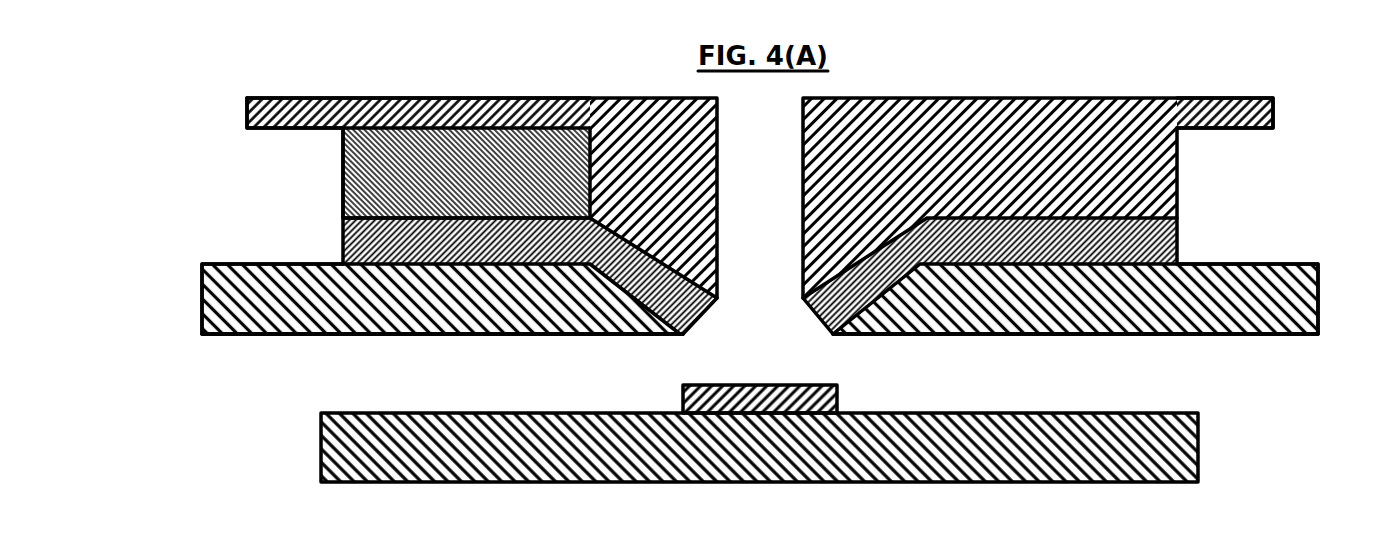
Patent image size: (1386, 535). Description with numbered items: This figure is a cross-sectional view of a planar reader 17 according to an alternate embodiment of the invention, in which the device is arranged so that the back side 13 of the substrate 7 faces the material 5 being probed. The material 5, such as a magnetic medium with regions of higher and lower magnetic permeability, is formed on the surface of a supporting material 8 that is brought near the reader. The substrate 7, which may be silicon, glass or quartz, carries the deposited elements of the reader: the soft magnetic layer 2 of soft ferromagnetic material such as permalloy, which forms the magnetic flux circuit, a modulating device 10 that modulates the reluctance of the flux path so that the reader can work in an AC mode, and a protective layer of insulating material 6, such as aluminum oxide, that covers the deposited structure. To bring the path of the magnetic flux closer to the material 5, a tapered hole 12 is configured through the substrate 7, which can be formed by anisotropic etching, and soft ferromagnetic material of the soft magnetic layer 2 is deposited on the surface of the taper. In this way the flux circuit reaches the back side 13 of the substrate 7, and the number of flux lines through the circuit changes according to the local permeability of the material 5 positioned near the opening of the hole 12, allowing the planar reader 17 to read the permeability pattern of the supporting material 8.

The soft magnetic layer 2 is at (345, 237).
The material 5 is at (838, 396).
The insulating material 6 is at (247, 112).
The substrate 7 is at (203, 296).
The supporting material 8 is at (1190, 450).
The modulating device 10 is at (345, 176).
The hole 12 is at (750, 332).
The back side 13 is at (232, 335).
The planar reader 17 is at (172, 216).